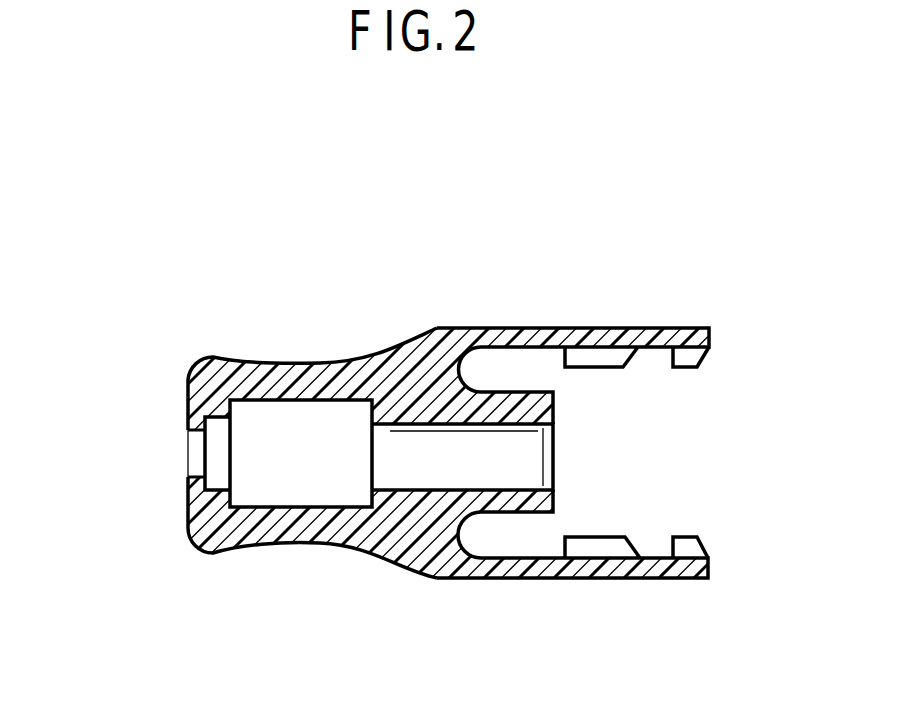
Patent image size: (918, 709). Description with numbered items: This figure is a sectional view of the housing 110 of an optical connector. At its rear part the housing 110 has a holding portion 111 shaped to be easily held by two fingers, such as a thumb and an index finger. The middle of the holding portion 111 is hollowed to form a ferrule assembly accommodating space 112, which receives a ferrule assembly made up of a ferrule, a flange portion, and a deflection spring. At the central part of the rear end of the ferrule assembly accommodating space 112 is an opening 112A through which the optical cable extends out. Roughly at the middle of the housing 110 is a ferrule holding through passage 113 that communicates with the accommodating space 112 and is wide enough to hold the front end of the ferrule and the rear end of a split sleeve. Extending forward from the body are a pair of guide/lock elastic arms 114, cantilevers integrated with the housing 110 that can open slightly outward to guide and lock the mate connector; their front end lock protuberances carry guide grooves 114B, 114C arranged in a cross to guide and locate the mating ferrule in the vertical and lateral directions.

The housing 110 is at (395, 328).
The holding portion 111 is at (262, 360).
The ferrule assembly accommodating space 112 is at (275, 475).
The opening 112A is at (200, 452).
The ferrule holding through passage 113 is at (443, 462).
The guide/lock elastic arm 114 is at (608, 327).
The guide groove 114B is at (687, 553).
The guide groove 114C is at (693, 353).